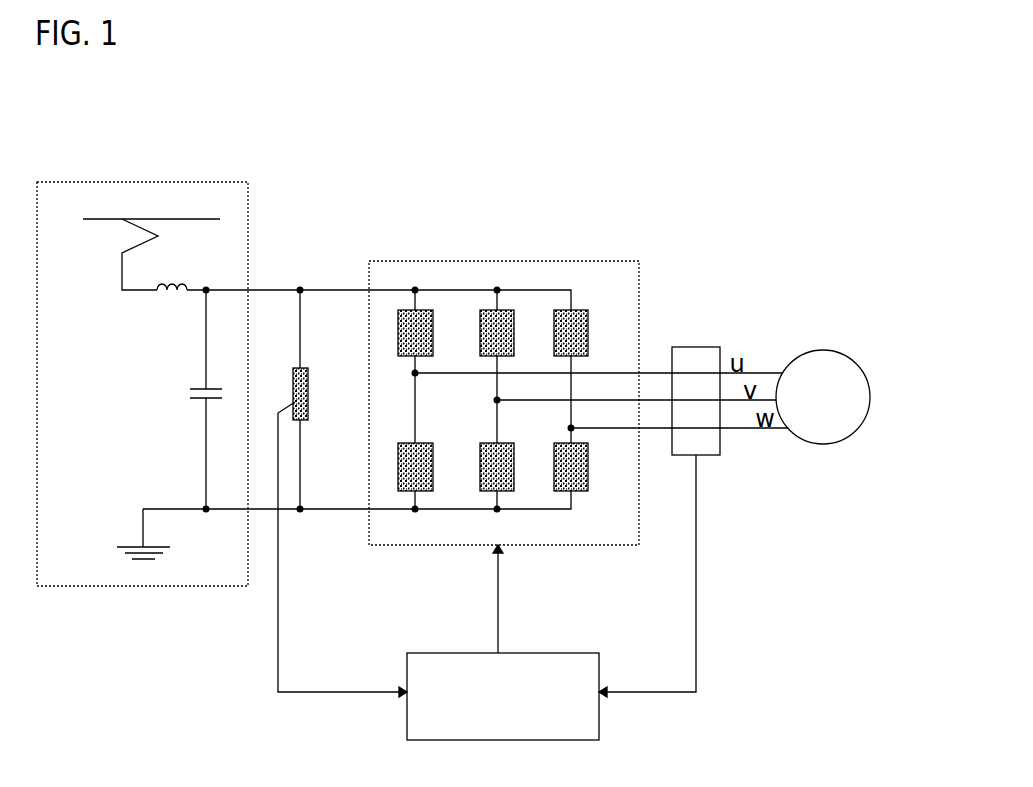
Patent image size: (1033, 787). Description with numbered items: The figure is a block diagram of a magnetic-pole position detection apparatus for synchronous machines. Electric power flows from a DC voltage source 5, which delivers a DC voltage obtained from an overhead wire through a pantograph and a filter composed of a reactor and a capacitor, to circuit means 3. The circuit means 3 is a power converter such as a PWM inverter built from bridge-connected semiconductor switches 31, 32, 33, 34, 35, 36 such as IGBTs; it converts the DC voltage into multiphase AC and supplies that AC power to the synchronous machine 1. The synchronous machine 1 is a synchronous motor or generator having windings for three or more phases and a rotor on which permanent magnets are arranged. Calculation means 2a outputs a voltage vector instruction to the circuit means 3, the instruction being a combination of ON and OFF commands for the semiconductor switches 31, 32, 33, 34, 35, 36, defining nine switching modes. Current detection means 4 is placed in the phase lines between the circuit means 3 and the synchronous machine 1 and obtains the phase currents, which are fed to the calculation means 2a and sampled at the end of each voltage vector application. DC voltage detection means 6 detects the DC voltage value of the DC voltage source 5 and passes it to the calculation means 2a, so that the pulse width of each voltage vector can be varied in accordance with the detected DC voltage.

The synchronous machine 1 is at (820, 350).
The calculation means 2a is at (563, 653).
The circuit means 3 is at (519, 367).
The semiconductor switch 31 is at (436, 337).
The semiconductor switch 32 is at (517, 337).
The semiconductor switch 33 is at (591, 337).
The semiconductor switch 34 is at (436, 470).
The semiconductor switch 35 is at (517, 470).
The semiconductor switch 36 is at (591, 470).
The current detection means 4 is at (695, 347).
The DC voltage source 5 is at (236, 182).
The DC voltage detection means 6 is at (300, 368).